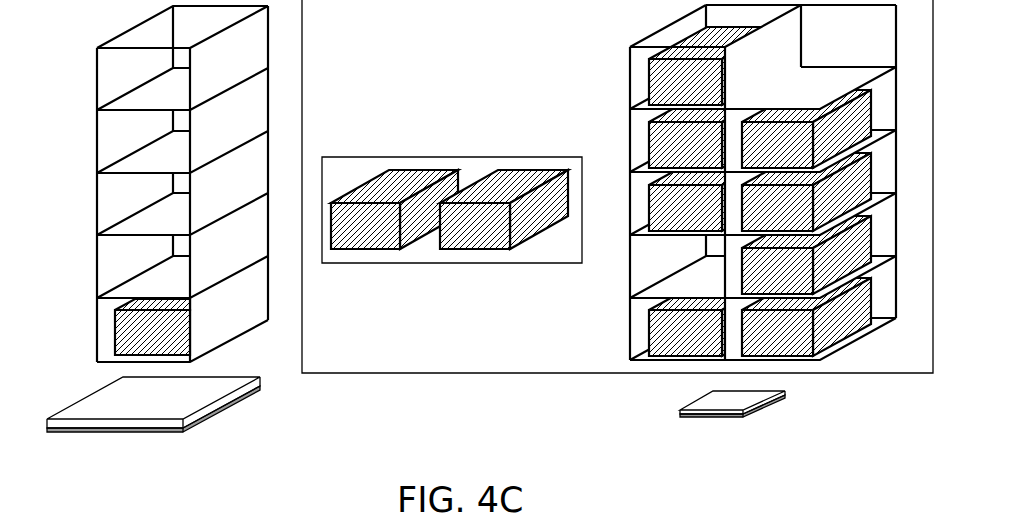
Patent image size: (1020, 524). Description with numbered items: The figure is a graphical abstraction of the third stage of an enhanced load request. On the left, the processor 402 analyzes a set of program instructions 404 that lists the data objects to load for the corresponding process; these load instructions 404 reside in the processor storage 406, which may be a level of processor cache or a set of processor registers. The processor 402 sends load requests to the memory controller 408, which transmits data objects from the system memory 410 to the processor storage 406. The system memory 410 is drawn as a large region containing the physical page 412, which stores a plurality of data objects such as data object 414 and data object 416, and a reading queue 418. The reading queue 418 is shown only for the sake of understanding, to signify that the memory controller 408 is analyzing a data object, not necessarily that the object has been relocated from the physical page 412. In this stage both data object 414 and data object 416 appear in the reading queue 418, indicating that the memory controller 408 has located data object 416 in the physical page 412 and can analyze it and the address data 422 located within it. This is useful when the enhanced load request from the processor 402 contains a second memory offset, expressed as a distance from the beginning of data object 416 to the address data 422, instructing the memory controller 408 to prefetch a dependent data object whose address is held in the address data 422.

The processor 402 is at (127, 412).
The set of program instructions 404 is at (123, 337).
The processor storage 406 is at (84, 95).
The memory controller 408 is at (733, 400).
The system memory 410 is at (405, 52).
The physical page 412 is at (612, 66).
The data object 414 is at (367, 238).
The data object 416 is at (520, 222).
The reading queue 418 is at (340, 163).
The address data 422 is at (518, 167).